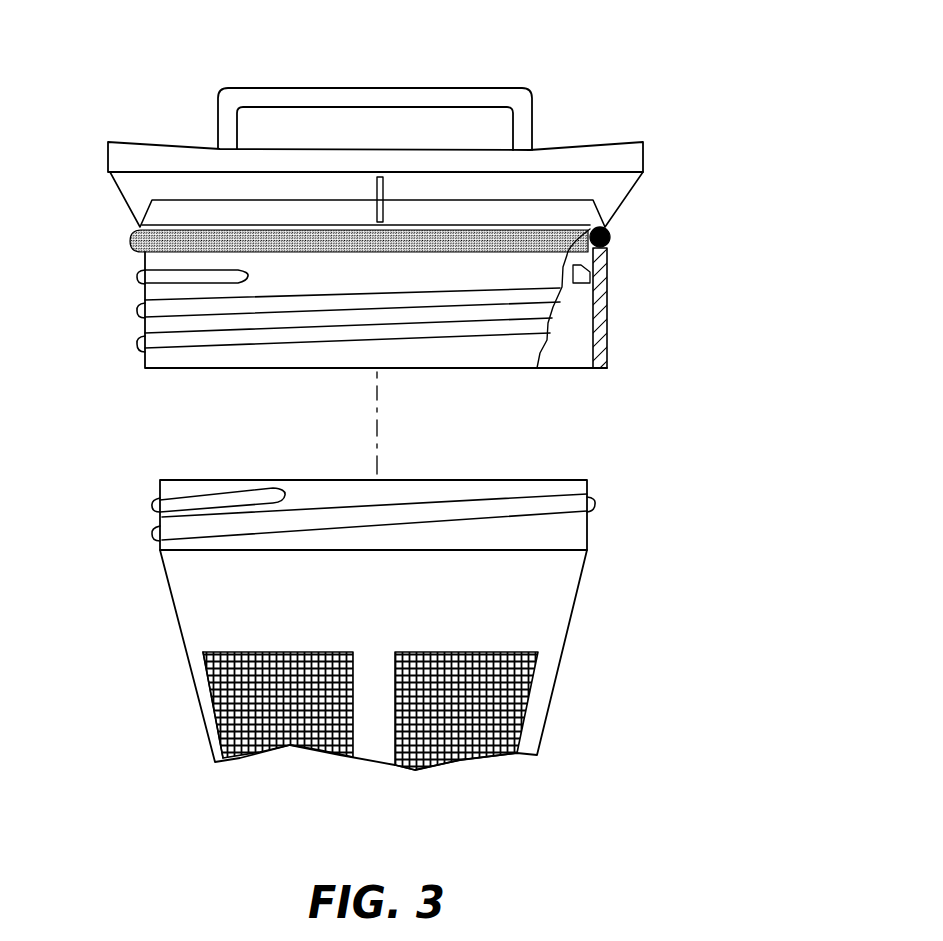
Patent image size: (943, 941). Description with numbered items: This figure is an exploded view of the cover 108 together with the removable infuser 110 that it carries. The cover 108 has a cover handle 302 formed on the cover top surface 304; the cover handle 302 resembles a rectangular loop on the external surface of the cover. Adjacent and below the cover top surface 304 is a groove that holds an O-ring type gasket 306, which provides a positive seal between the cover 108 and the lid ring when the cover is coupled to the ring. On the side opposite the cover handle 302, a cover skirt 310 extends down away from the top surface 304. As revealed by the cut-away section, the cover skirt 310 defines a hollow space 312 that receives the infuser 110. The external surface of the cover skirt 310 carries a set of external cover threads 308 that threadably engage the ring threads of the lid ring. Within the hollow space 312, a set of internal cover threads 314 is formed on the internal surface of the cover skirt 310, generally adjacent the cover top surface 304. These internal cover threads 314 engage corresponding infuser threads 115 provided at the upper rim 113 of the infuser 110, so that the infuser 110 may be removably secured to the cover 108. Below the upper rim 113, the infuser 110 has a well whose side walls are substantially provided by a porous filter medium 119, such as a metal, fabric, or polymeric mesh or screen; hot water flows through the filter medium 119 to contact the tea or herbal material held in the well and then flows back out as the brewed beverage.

The cover 108 is at (723, 113).
The cover handle 302 is at (478, 82).
The cover top surface 304 is at (584, 144).
The O-ring gasket 306 is at (130, 241).
The external cover threads 308 is at (155, 344).
The cover skirt 310 is at (152, 278).
The hollow space 312 is at (572, 345).
The internal cover threads 314 is at (608, 312).
The upper rim 113 is at (547, 480).
The infuser threads 115 is at (150, 527).
The infuser 110 is at (583, 615).
The porous filter medium 119 is at (227, 710).